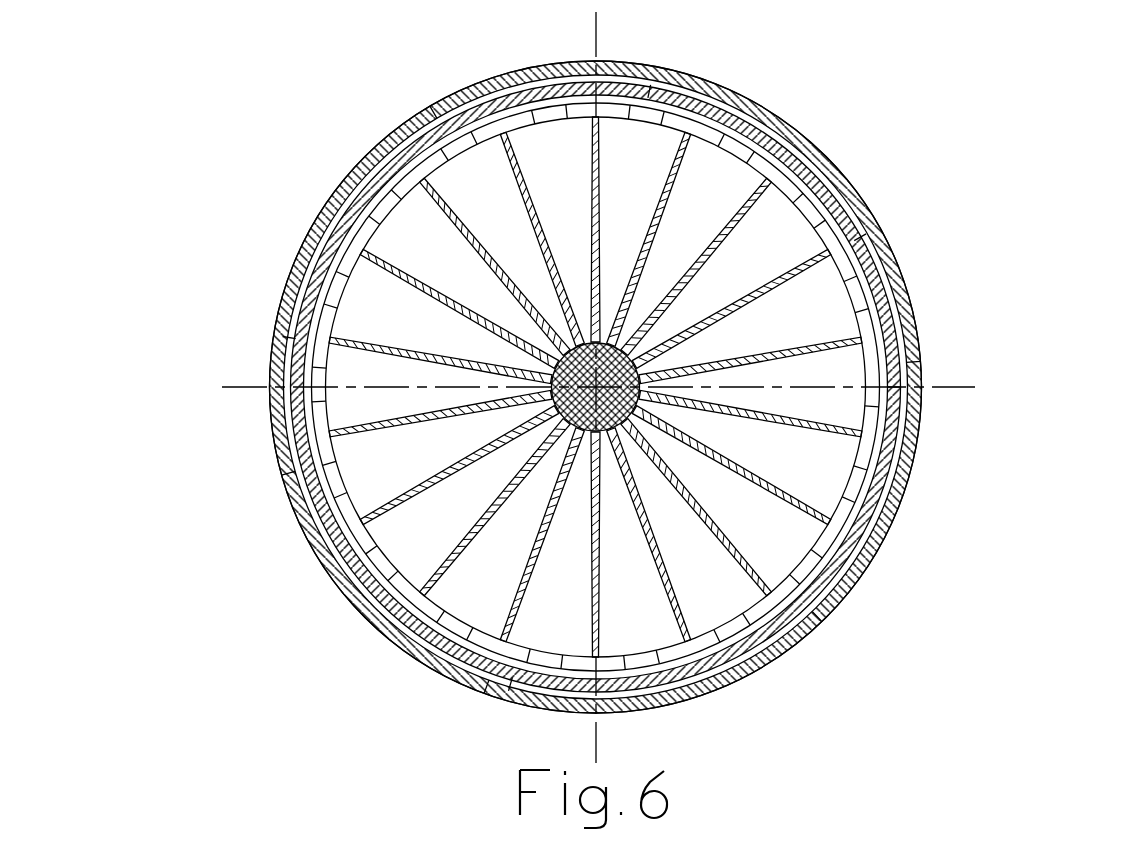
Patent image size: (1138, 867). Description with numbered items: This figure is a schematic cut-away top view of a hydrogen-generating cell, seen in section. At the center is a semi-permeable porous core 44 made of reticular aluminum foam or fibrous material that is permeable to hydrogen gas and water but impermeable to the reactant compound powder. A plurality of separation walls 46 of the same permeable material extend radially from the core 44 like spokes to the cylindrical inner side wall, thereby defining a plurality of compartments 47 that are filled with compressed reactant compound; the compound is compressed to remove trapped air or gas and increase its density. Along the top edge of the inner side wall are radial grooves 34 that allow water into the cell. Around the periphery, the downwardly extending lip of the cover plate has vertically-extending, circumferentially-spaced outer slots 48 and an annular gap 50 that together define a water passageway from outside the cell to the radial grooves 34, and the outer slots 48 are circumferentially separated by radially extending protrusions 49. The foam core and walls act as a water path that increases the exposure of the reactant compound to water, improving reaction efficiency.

The semi-permeable porous core 44 is at (636, 350).
The compartments 47 is at (783, 308).
The separation walls 46 is at (862, 337).
The radial grooves 34 is at (857, 477).
The annular gap 50 is at (345, 538).
The outer slots 48 is at (283, 360).
The protrusions 49 is at (273, 445).